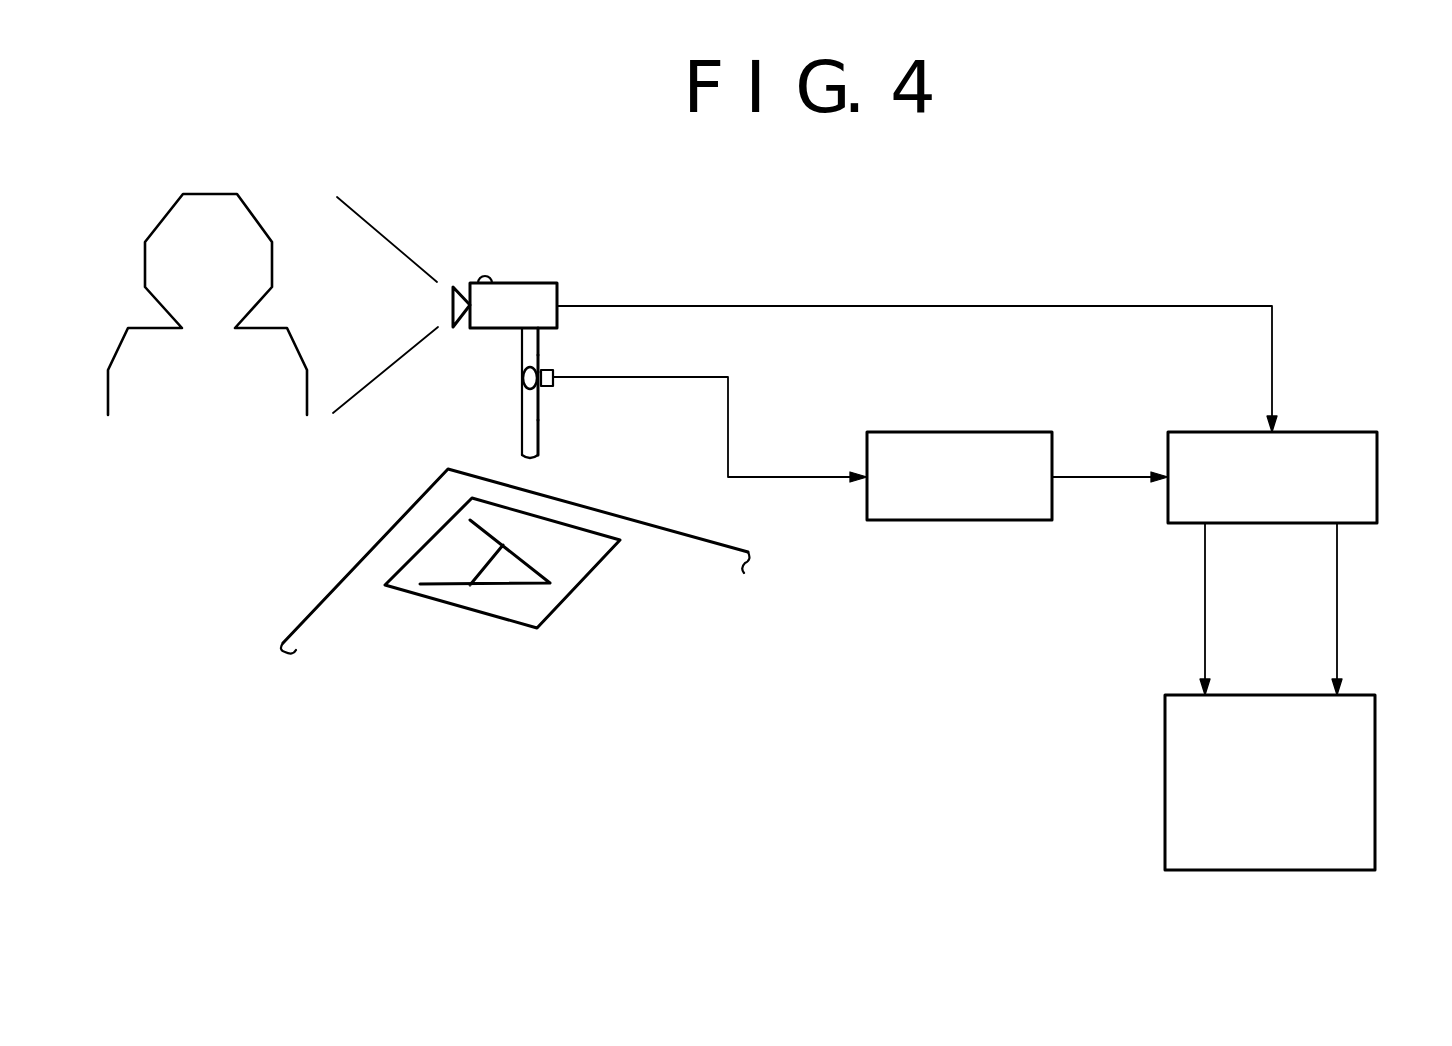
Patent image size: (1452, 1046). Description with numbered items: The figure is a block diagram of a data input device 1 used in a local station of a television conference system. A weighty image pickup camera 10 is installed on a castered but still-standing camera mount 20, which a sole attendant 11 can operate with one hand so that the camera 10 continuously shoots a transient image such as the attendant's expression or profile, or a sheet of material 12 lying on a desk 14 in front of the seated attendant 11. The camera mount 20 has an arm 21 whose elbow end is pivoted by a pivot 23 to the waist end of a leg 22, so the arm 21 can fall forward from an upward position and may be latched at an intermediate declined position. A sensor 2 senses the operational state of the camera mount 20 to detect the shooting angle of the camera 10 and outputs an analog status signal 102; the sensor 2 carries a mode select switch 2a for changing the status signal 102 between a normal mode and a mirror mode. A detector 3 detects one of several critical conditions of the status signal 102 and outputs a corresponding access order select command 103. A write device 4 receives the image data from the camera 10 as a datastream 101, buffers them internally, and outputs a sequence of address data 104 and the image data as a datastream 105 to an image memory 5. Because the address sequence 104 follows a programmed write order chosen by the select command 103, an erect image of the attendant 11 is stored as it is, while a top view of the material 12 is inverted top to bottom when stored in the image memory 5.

The data input device 1 is at (927, 534).
The sensor 2 is at (554, 386).
The mode select switch 2a is at (541, 364).
The detector 3 is at (943, 432).
The write device 4 is at (1327, 432).
The image memory 5 is at (1375, 790).
The image pickup camera 10 is at (503, 283).
The attendant 11 is at (170, 387).
The sheet of material 12 is at (448, 603).
The desk 14 is at (317, 607).
The camera mount 20 is at (504, 394).
The arm 21 is at (541, 355).
The leg 22 is at (540, 437).
The pivot 23 is at (540, 398).
The datastream 101 is at (1127, 306).
The analog status signal 102 is at (790, 477).
The access order select command 103 is at (1103, 477).
The sequence of address data 104 is at (1205, 632).
The image datastream 105 is at (1337, 638).